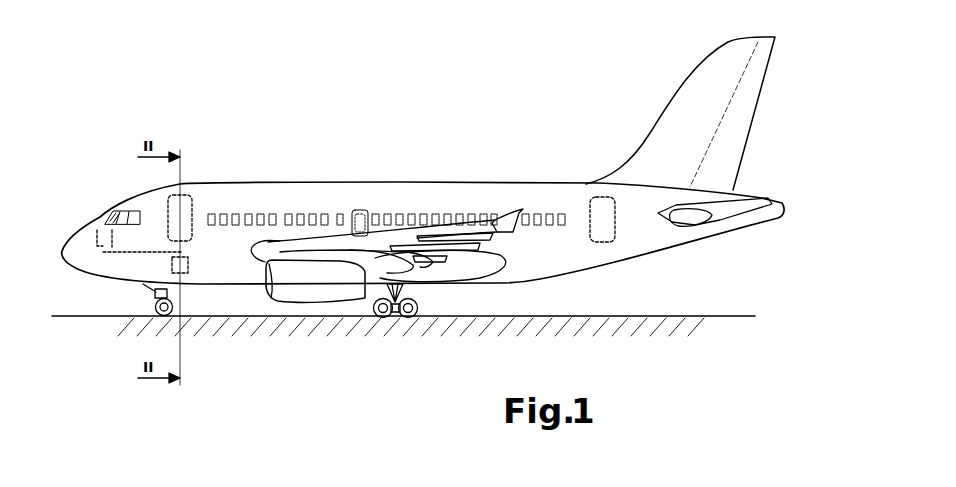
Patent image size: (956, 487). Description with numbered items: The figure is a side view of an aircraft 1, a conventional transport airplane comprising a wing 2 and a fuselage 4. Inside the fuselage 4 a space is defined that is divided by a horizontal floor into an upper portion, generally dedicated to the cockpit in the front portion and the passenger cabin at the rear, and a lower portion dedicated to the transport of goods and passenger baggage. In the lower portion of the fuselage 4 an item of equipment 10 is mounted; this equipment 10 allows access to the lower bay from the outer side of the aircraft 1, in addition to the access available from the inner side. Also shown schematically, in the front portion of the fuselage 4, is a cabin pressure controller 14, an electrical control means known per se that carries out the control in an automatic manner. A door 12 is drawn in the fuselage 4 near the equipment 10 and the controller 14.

The aircraft 1 is at (378, 116).
The wing 2 is at (413, 234).
The fuselage 4 is at (307, 202).
The item of equipment 10 is at (190, 266).
The door 12 is at (186, 221).
The cabin pressure controller 14 is at (97, 241).